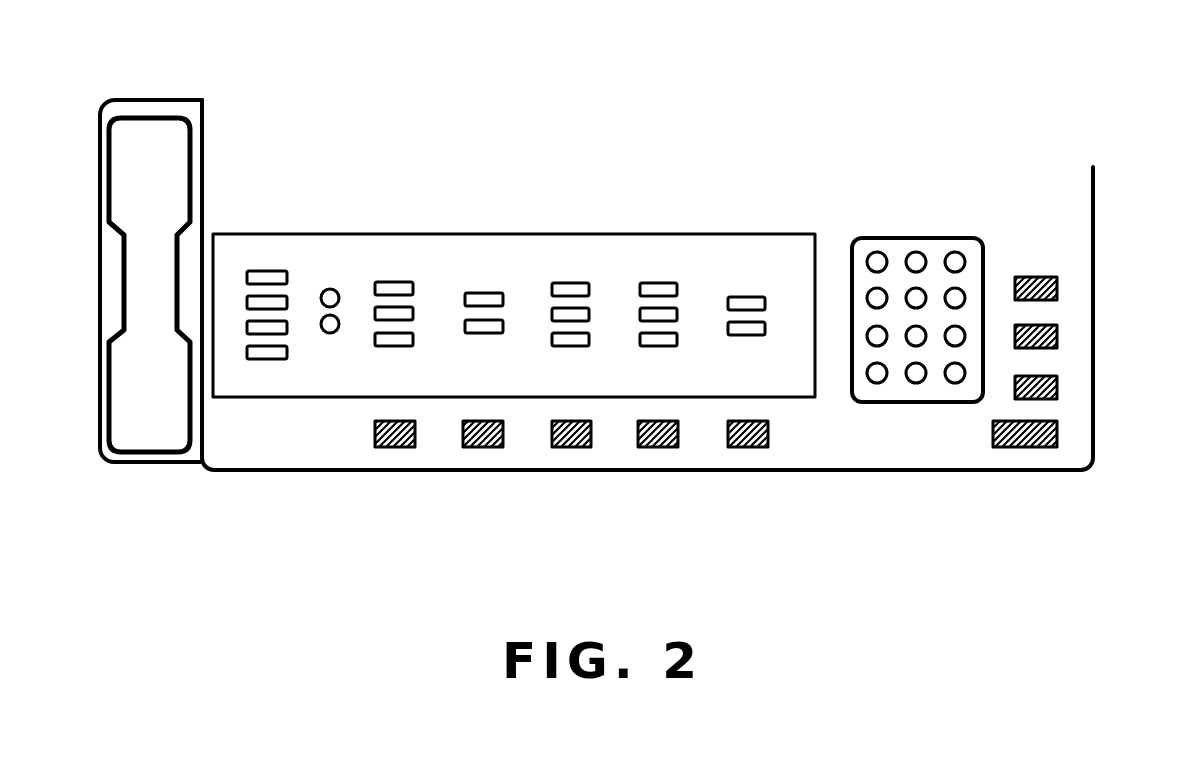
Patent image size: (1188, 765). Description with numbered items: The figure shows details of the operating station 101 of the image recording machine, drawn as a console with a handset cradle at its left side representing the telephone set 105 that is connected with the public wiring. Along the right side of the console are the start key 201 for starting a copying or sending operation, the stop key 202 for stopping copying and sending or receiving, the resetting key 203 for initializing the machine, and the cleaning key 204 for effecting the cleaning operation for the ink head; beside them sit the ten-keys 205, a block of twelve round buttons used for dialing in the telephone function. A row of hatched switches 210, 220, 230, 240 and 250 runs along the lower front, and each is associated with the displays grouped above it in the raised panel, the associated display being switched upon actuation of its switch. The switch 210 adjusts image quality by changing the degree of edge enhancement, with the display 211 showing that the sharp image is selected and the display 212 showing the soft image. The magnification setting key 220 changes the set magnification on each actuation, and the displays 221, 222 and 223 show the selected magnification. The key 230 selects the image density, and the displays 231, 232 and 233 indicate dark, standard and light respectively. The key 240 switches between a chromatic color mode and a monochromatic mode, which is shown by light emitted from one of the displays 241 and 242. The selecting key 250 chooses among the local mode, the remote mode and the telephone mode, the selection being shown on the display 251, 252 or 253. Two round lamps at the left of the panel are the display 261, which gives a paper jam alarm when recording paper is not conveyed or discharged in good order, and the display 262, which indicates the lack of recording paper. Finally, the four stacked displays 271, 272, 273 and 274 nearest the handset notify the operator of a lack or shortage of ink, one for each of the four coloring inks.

The operating station 101 is at (1067, 188).
The telephone set 105 is at (147, 127).
The start key 201 is at (1030, 447).
The stop key 202 is at (1057, 389).
The resetting key 203 is at (1057, 338).
The cleaning key 204 is at (1057, 289).
The ten-keys 205 is at (933, 248).
The switch 210 is at (745, 447).
The display 211 is at (765, 327).
The display 212 is at (765, 302).
The magnification setting key 220 is at (655, 447).
The display 221 is at (677, 339).
The display 222 is at (677, 313).
The display 223 is at (665, 283).
The key 230 is at (572, 447).
The display 231 is at (589, 339).
The display 232 is at (589, 314).
The display 233 is at (556, 283).
The key 240 is at (485, 447).
The display 241 is at (503, 327).
The display 242 is at (480, 293).
The selecting key 250 is at (387, 447).
The display 251 is at (413, 340).
The display 252 is at (413, 313).
The display 253 is at (386, 282).
The display 261 is at (338, 318).
The display 262 is at (323, 292).
The display 271 is at (270, 359).
The display 272 is at (247, 328).
The display 273 is at (247, 303).
The display 274 is at (247, 278).